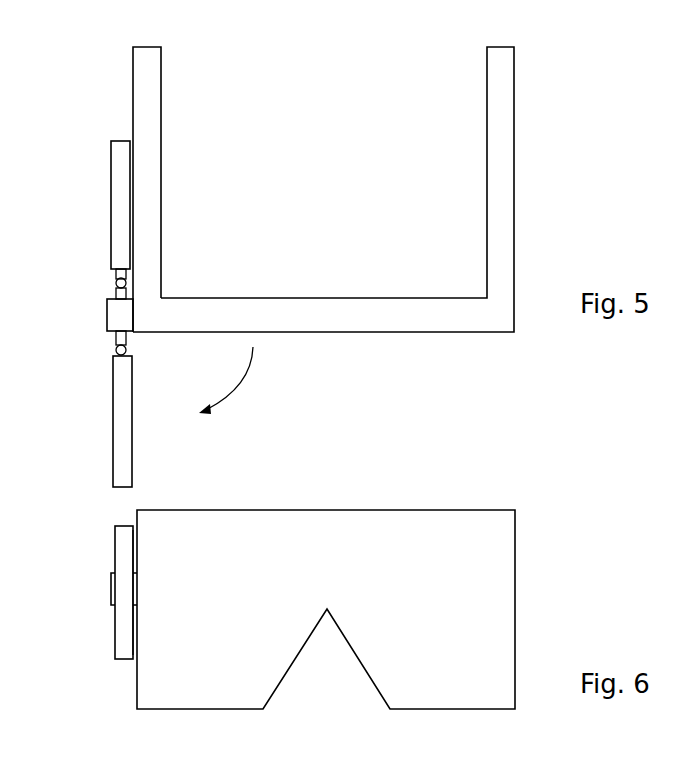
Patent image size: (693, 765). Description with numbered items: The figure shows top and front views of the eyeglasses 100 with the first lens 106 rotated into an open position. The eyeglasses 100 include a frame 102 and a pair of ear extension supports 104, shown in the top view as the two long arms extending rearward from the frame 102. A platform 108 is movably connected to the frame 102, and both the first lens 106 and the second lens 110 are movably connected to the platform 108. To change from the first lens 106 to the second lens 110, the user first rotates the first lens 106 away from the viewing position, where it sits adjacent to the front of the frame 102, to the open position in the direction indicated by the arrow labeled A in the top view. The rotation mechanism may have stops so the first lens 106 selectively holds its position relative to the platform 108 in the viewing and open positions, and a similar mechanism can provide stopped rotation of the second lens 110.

In FIG. 5, the eyeglasses 100 is at (401, 122).
In FIG. 6, the eyeglasses 100 is at (575, 520).
In FIG. 5, the frame 102 is at (437, 296).
In FIG. 6, the frame 102 is at (470, 508).
In FIG. 5, the ear extension supports 104 is at (162, 126).
In FIG. 5, the first lens 106 is at (132, 447).
In FIG. 6, the first lens 106 is at (115, 644).
In FIG. 5, the platform 108 is at (107, 320).
In FIG. 6, the platform 108 is at (111, 589).
In FIG. 5, the second lens 110 is at (111, 193).
In FIG. 6, the second lens 110 is at (112, 541).